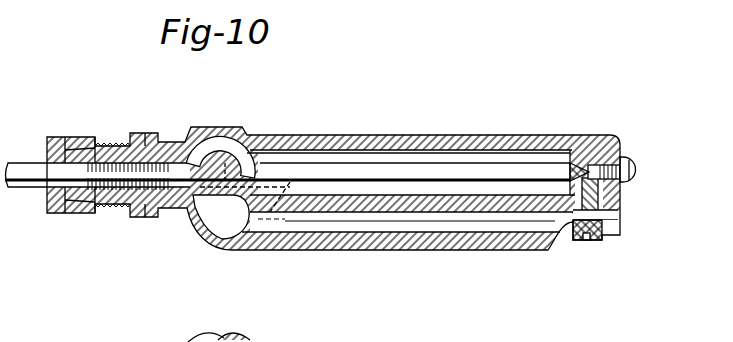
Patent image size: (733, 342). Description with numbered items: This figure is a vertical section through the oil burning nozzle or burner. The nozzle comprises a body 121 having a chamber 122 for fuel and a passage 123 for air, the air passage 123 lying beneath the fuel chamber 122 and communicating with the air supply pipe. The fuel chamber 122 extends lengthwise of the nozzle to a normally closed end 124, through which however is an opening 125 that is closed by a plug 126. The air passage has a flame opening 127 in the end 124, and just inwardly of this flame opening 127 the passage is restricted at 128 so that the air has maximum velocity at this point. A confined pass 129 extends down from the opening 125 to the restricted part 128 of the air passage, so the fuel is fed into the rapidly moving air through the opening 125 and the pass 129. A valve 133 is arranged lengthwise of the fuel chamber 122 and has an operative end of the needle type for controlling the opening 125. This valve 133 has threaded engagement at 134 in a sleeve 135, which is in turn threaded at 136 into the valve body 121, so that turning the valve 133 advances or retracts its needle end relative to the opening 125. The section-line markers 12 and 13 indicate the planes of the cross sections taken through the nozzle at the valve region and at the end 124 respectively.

The section line 12- 12 is at (216, 122).
The section line 13- 13 is at (587, 130).
The body 121 is at (367, 141).
The chamber 122 is at (427, 161).
The passage 123 is at (435, 220).
The closed end 124 is at (623, 138).
The opening 125 is at (603, 158).
The plug 126 is at (634, 164).
The flame opening 127 is at (616, 217).
The restricted part 128 is at (572, 237).
The confined pass 129 is at (603, 192).
The valve 133 is at (197, 220).
The threaded engagement 134 is at (116, 208).
The sleeve 135 is at (61, 218).
The threads 136 is at (152, 138).